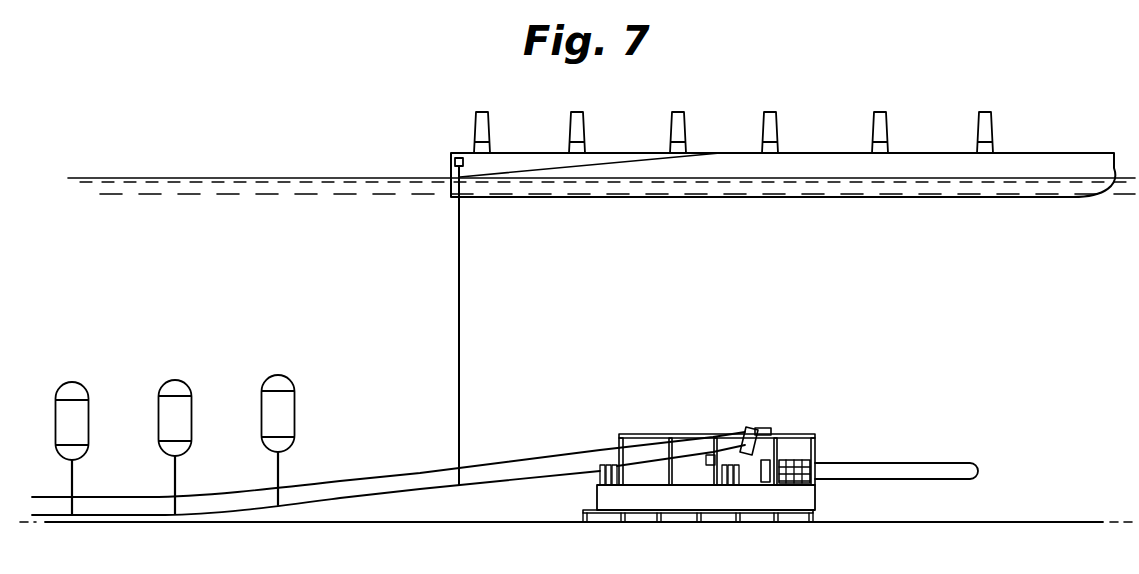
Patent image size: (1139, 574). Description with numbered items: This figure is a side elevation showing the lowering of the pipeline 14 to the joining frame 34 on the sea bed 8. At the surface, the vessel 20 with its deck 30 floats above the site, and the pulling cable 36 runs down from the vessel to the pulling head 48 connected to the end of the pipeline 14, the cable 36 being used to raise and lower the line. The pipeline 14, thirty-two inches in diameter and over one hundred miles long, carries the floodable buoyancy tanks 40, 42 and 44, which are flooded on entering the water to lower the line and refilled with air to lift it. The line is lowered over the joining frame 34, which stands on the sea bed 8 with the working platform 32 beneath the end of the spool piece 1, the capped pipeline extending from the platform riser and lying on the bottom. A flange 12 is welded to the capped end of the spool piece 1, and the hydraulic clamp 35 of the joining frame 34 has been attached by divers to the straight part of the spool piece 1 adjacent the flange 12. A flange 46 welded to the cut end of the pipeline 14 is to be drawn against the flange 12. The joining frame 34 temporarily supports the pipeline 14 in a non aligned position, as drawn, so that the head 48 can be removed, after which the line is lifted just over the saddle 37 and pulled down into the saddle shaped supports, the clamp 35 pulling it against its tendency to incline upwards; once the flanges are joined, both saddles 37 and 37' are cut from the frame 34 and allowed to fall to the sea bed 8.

The spool piece 1 is at (912, 473).
The sea bed 8 is at (1019, 497).
The flange 12 is at (767, 486).
The pipeline 14 is at (368, 480).
The vessel 20 is at (908, 160).
The deck 30 is at (812, 152).
The working platform 32 is at (818, 512).
The joining frame 34 is at (815, 437).
The hydraulic clamp 35 is at (793, 458).
The pulling cable 36 is at (460, 287).
The saddle 37 is at (574, 488).
The saddle 37' is at (711, 518).
The floodable buoyancy tank 40 is at (287, 407).
The floodable buoyancy tank 42 is at (183, 410).
The floodable buoyancy tank 44 is at (78, 413).
The flange 46 is at (748, 430).
The pulling head 48 is at (765, 430).